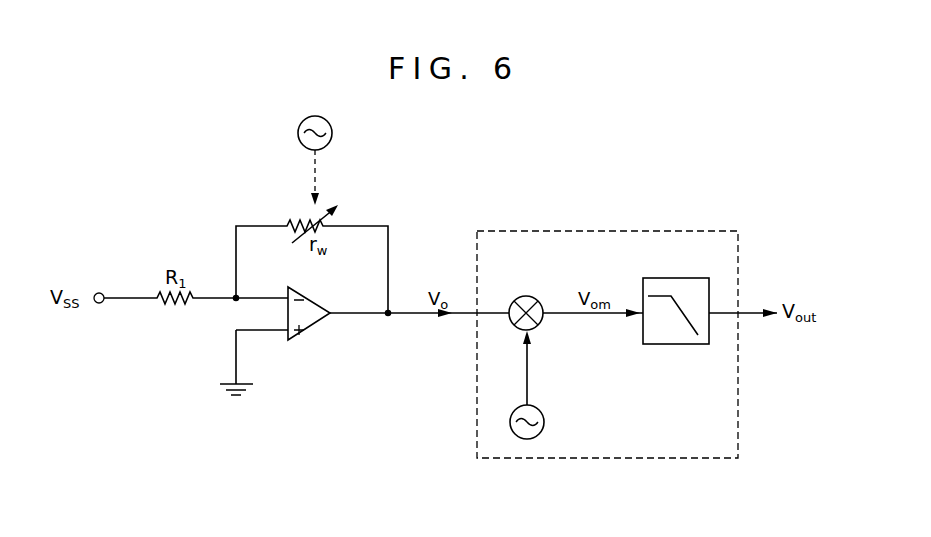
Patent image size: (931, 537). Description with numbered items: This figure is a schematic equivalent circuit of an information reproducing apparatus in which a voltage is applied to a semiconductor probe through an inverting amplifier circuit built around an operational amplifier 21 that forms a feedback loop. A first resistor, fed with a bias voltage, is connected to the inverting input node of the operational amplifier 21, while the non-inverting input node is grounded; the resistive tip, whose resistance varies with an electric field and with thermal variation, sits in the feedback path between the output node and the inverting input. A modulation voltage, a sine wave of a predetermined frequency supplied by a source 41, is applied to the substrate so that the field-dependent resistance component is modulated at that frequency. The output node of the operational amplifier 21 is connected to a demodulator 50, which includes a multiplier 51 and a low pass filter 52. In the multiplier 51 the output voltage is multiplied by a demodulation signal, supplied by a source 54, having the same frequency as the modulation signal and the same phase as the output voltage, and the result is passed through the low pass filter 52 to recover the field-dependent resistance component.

The substrate voltage source (V_sub) 41 is at (332, 133).
The operational amplifier 21 is at (314, 328).
The demodulator 50 is at (634, 231).
The multiplier 51 is at (514, 332).
The LPF 52 is at (669, 344).
The substrate voltage source (V_sub') 54 is at (544, 421).